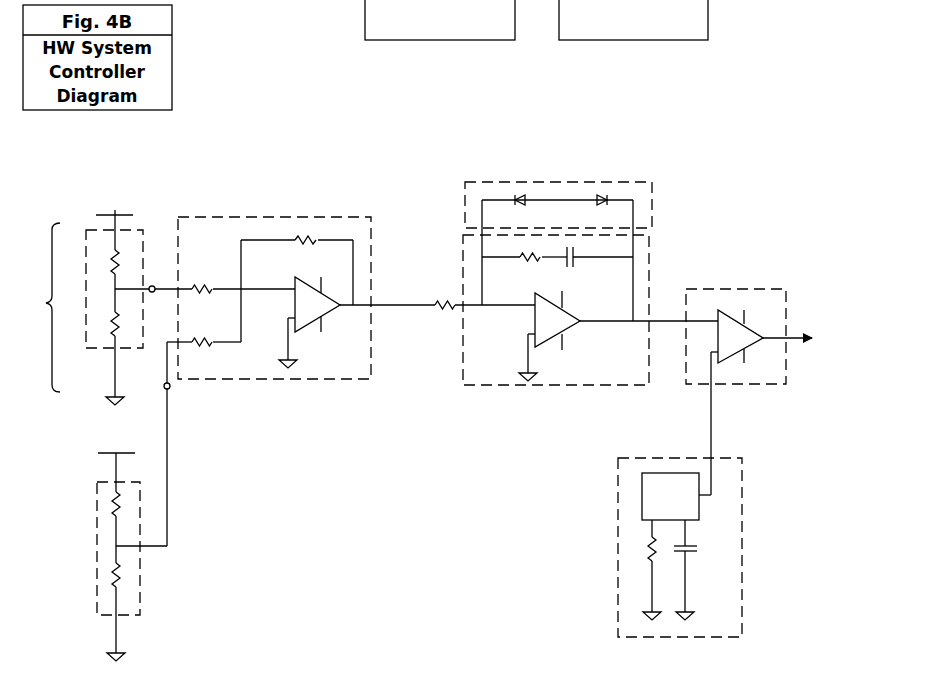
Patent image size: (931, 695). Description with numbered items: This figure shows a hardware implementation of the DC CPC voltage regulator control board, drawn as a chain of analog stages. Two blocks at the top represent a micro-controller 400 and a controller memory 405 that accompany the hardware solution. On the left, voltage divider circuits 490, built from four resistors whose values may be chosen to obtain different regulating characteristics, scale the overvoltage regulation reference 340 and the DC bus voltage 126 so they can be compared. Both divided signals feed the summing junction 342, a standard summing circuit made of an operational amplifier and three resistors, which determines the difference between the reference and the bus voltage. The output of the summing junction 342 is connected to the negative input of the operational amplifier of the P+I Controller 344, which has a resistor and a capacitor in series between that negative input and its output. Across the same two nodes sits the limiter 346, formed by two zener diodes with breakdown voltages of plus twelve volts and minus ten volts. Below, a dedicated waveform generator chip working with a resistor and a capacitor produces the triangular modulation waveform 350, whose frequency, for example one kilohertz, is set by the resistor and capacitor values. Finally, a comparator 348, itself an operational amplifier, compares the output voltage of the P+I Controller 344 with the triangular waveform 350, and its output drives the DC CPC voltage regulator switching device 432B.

The micro-controller 400 is at (440, 20).
The controller memory 405 is at (633, 20).
The overvoltage regulation reference 340 is at (36, 303).
The summing junction 342 is at (275, 361).
The limiter 346 is at (558, 186).
The P+I Controller 344 is at (576, 306).
The comparator 348 is at (740, 375).
The DC CPC voltage regulator switching device 432B is at (828, 342).
The triangular modulation waveform 350 is at (633, 547).
The DC bus voltage 126 is at (87, 557).
The voltage divider circuits 490 is at (144, 351).